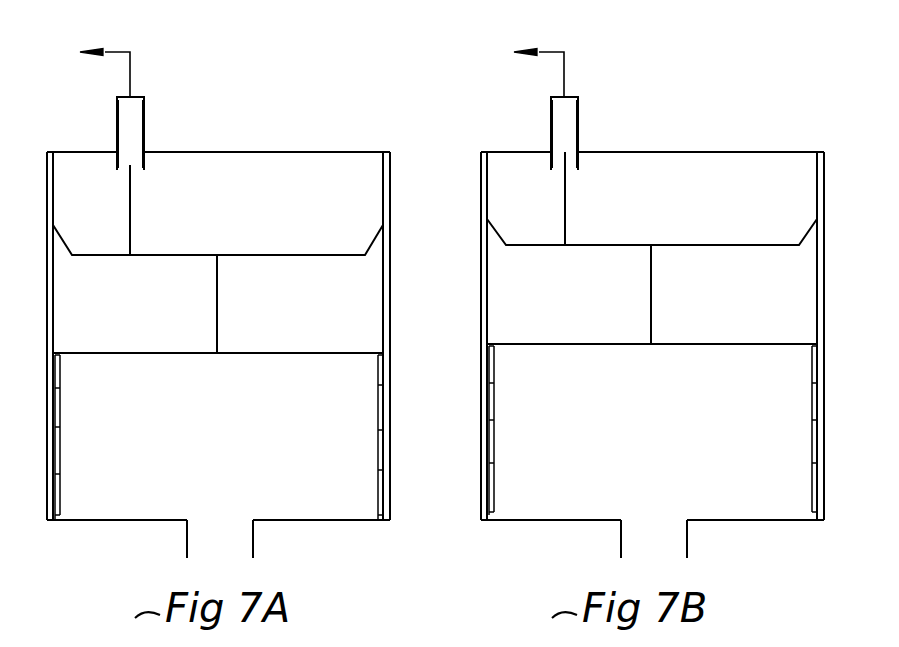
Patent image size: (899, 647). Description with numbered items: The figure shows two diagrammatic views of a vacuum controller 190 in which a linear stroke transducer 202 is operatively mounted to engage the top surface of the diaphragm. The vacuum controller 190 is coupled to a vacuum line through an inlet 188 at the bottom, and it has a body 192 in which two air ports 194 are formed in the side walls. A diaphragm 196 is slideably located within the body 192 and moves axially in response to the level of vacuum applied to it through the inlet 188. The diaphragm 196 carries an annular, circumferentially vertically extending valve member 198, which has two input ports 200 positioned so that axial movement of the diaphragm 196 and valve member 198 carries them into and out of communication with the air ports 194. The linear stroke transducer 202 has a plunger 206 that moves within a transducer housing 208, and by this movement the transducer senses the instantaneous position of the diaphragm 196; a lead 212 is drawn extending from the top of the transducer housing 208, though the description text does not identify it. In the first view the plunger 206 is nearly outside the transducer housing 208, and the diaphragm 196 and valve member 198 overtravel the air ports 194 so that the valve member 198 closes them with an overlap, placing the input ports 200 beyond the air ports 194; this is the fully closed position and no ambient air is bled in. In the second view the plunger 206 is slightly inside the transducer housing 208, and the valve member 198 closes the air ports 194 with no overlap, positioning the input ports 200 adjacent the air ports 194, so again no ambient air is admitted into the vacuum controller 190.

In FIG. 7A, the inlet 188 is at (225, 540).
In FIG. 7B, the inlet 188 is at (652, 543).
In FIG. 7A, the vacuum controller 190 is at (330, 120).
In FIG. 7B, the vacuum controller 190 is at (765, 112).
In FIG. 7A, the body 192 is at (385, 200).
In FIG. 7B, the body 192 is at (818, 197).
In FIG. 7A, the air port 194 is at (47, 400).
In FIG. 7B, the air port 194 is at (820, 412).
In FIG. 7A, the diaphragm 196 is at (365, 292).
In FIG. 7B, the diaphragm 196 is at (800, 308).
In FIG. 7A, the valve member 198 is at (380, 378).
In FIG. 7B, the valve member 198 is at (815, 362).
In FIG. 7A, the input port 200 is at (60, 492).
In FIG. 7B, the input port 200 is at (812, 482).
In FIG. 7A, the linear stroke transducer 202 is at (117, 130).
In FIG. 7B, the linear stroke transducer 202 is at (552, 124).
In FIG. 7A, the plunger 206 is at (130, 195).
In FIG. 7B, the plunger 206 is at (567, 190).
In FIG. 7A, the transducer housing 208 is at (135, 120).
In FIG. 7B, the transducer housing 208 is at (567, 125).
In FIG. 7A, the wire lead 212 is at (110, 52).
In FIG. 7B, the wire lead 212 is at (548, 52).